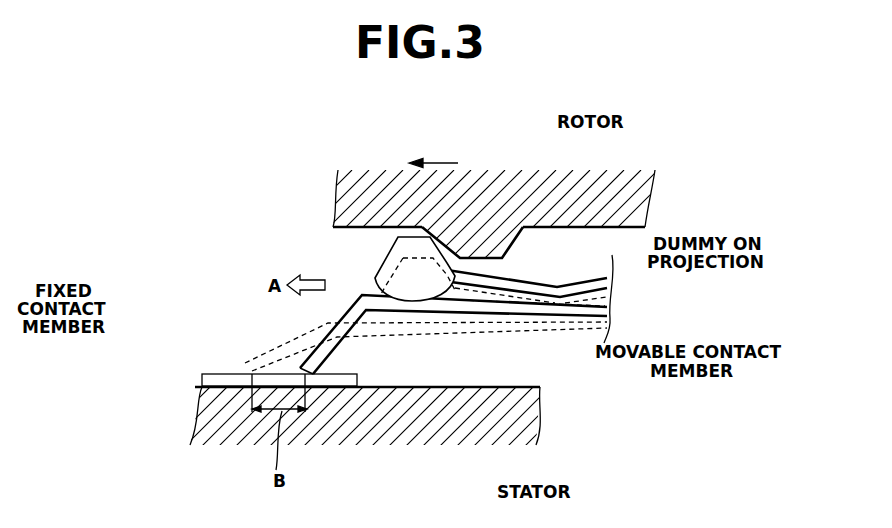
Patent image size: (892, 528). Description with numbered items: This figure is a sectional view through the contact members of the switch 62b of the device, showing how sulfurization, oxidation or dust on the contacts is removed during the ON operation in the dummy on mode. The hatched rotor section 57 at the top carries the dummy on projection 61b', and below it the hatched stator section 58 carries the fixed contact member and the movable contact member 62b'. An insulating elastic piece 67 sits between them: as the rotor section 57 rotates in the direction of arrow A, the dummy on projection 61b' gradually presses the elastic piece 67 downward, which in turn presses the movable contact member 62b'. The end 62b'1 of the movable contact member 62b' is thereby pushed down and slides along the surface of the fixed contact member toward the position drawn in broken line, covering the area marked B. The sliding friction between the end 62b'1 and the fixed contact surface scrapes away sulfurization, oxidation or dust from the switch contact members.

The rotor section 57 is at (518, 170).
The dummy on projection 61b' is at (531, 242).
The elastic piece 67 is at (385, 257).
The switch 62b is at (412, 314).
The movable contact member 62b' is at (426, 314).
The end of the movable contact member 62b'1 is at (287, 438).
The stator section 58 is at (453, 422).